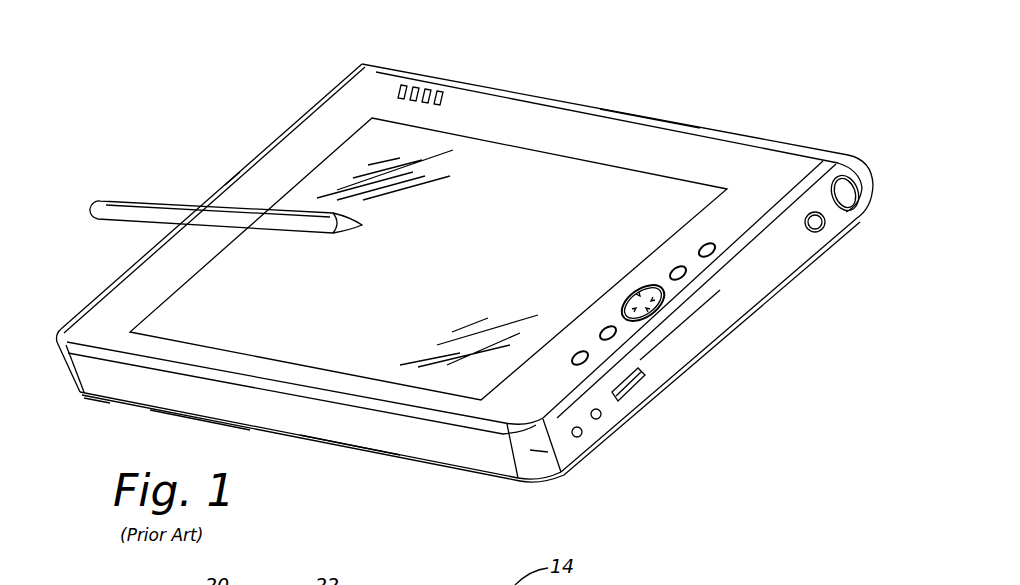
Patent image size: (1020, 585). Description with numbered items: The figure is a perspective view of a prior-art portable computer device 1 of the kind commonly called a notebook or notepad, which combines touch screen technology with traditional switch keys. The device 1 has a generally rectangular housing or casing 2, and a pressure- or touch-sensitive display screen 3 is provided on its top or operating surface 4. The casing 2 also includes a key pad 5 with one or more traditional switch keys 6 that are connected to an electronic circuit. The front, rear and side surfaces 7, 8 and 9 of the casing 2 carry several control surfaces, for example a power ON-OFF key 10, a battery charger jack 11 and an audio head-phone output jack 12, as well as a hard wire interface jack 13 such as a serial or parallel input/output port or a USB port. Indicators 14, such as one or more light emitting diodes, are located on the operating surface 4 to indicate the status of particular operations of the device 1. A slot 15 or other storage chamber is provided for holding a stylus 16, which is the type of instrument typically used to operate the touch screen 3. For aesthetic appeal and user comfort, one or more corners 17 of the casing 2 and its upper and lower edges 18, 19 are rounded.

The portable computer device 1 is at (244, 88).
The housing or casing 2 is at (348, 76).
The pressure- or touch-sensitive display screen 3 is at (348, 150).
The top or operating surface 4 is at (260, 188).
The key pad 5 is at (728, 234).
The switch key 6 is at (686, 270).
The front surface 7 is at (213, 397).
The rear surface 8 is at (731, 129).
The side surface 9 is at (658, 360).
The power ON-OFF key 10 is at (820, 228).
The battery charger jack 11 is at (580, 436).
The audio head-phone output jack 12 is at (599, 419).
The hard wire interface jack 13 is at (630, 393).
The indicator 14 is at (467, 77).
The slot 15 is at (845, 197).
The stylus 16 is at (128, 224).
The corner 17 is at (541, 465).
The upper edge 18 is at (352, 398).
The lower edge 19 is at (106, 400).